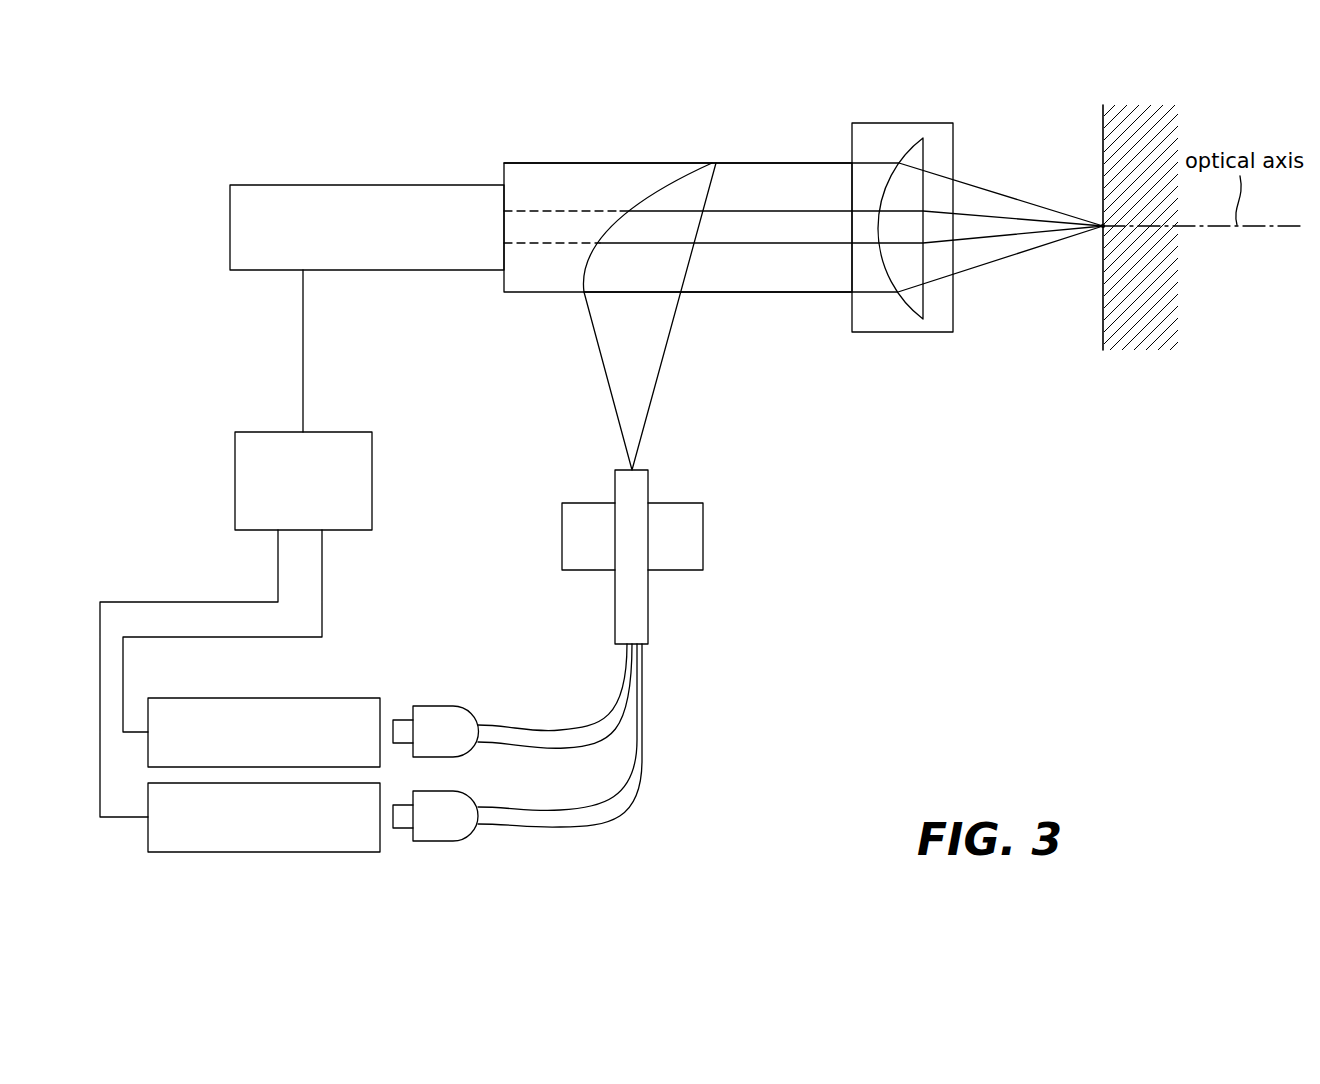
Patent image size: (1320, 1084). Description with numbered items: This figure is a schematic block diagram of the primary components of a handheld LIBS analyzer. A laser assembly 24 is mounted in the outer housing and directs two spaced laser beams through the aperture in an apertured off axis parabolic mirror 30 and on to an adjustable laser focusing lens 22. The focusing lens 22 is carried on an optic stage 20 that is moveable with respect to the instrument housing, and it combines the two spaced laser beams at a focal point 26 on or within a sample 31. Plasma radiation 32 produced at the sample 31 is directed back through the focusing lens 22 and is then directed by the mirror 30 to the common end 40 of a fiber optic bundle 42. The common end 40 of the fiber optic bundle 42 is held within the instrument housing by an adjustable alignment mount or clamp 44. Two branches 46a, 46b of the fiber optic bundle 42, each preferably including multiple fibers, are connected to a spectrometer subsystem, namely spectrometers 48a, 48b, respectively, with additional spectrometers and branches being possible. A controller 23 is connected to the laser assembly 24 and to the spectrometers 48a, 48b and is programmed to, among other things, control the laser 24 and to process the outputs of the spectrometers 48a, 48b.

The optic stage 20 is at (954, 300).
The laser focusing lens 22 is at (906, 303).
The controller 23 is at (289, 506).
The laser assembly 24 is at (434, 242).
The focal point 26 is at (1103, 226).
The apertured off axis parabolic mirror 30 is at (565, 161).
The sample 31 is at (1104, 315).
The plasma radiation 32 is at (780, 293).
The common end 40 is at (637, 472).
The fiber optic bundle 42 is at (590, 712).
The adjustable alignment mount or clamp 44 is at (688, 503).
The branch 46a is at (500, 726).
The branch 46b is at (510, 824).
The spectrometer 48a is at (250, 698).
The spectrometer 48b is at (250, 852).